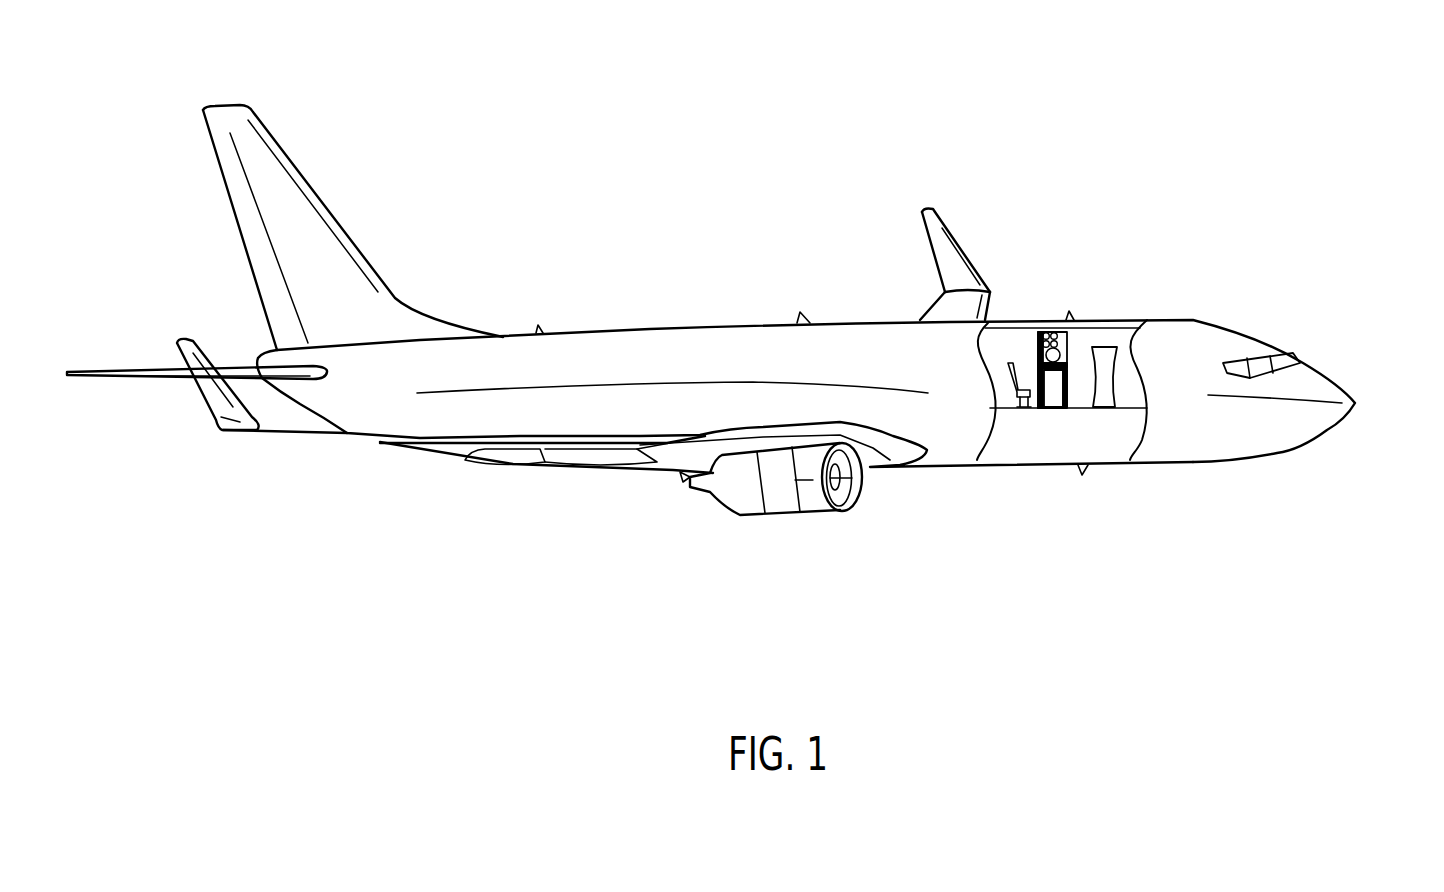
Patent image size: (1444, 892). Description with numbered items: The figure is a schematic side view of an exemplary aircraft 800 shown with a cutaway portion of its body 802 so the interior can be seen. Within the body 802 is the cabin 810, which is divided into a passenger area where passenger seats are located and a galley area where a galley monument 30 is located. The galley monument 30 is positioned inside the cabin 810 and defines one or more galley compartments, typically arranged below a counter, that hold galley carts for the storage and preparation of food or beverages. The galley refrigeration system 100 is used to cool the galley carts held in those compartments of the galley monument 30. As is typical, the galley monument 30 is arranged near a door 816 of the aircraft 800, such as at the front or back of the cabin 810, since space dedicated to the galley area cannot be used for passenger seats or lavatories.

The aircraft 800 is at (1366, 259).
The body 802 is at (873, 330).
The cabin 810 is at (1021, 350).
The galley refrigeration system 100 is at (1054, 299).
The galley monument 30 is at (1070, 387).
The door 816 is at (1105, 352).